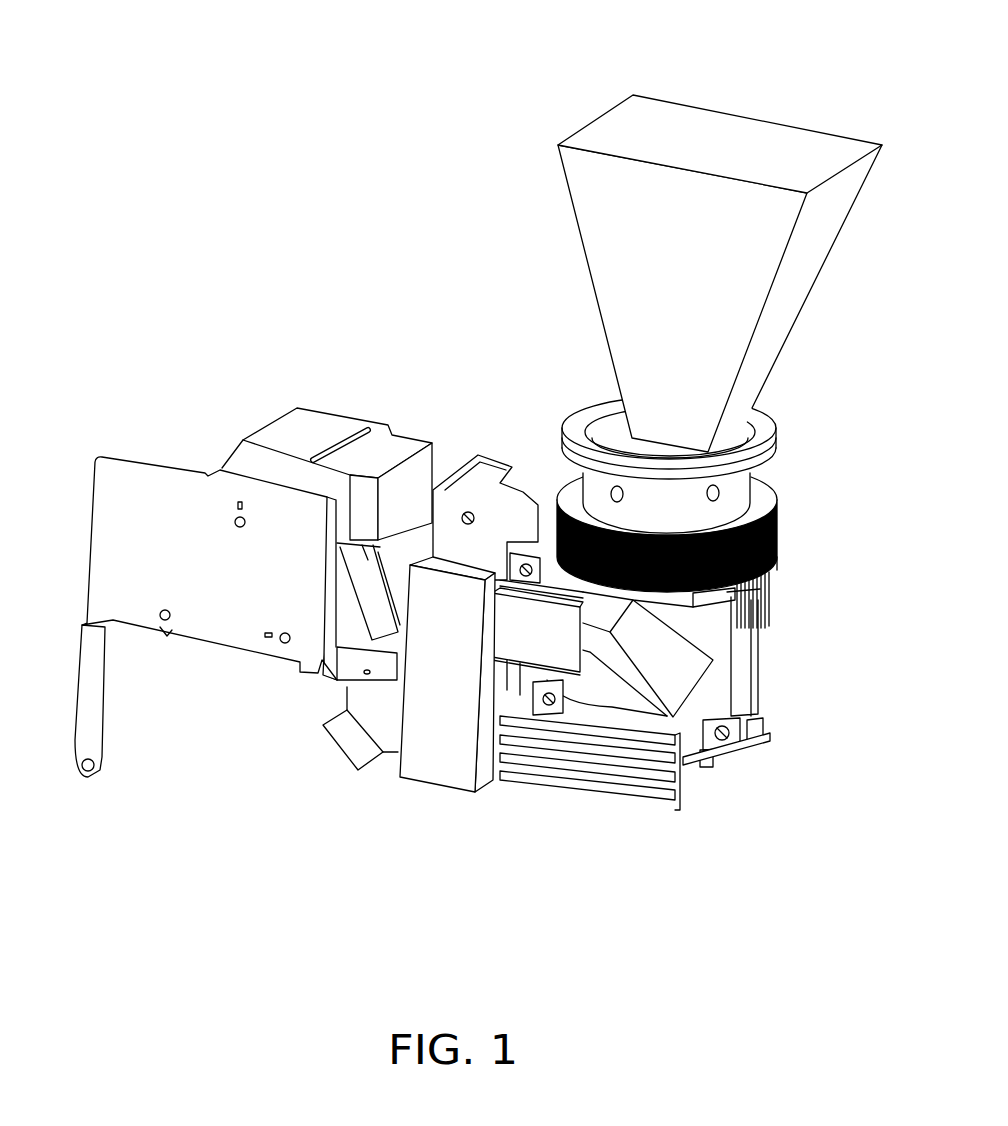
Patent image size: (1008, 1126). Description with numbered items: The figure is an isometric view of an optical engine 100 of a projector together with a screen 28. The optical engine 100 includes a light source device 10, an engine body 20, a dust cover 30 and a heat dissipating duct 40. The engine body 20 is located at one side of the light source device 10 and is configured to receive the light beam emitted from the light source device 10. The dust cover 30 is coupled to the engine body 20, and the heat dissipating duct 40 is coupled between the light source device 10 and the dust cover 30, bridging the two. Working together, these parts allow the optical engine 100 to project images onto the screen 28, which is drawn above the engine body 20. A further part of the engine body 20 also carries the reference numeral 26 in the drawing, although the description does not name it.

The projector optical system 100 is at (437, 50).
The light source module 10 is at (298, 428).
The optical engine frame 20 is at (742, 673).
The lens barrel 26 is at (737, 498).
The light guide duct 28 is at (737, 128).
The electronic component box 30 is at (443, 772).
The fixing bracket 40 is at (348, 735).